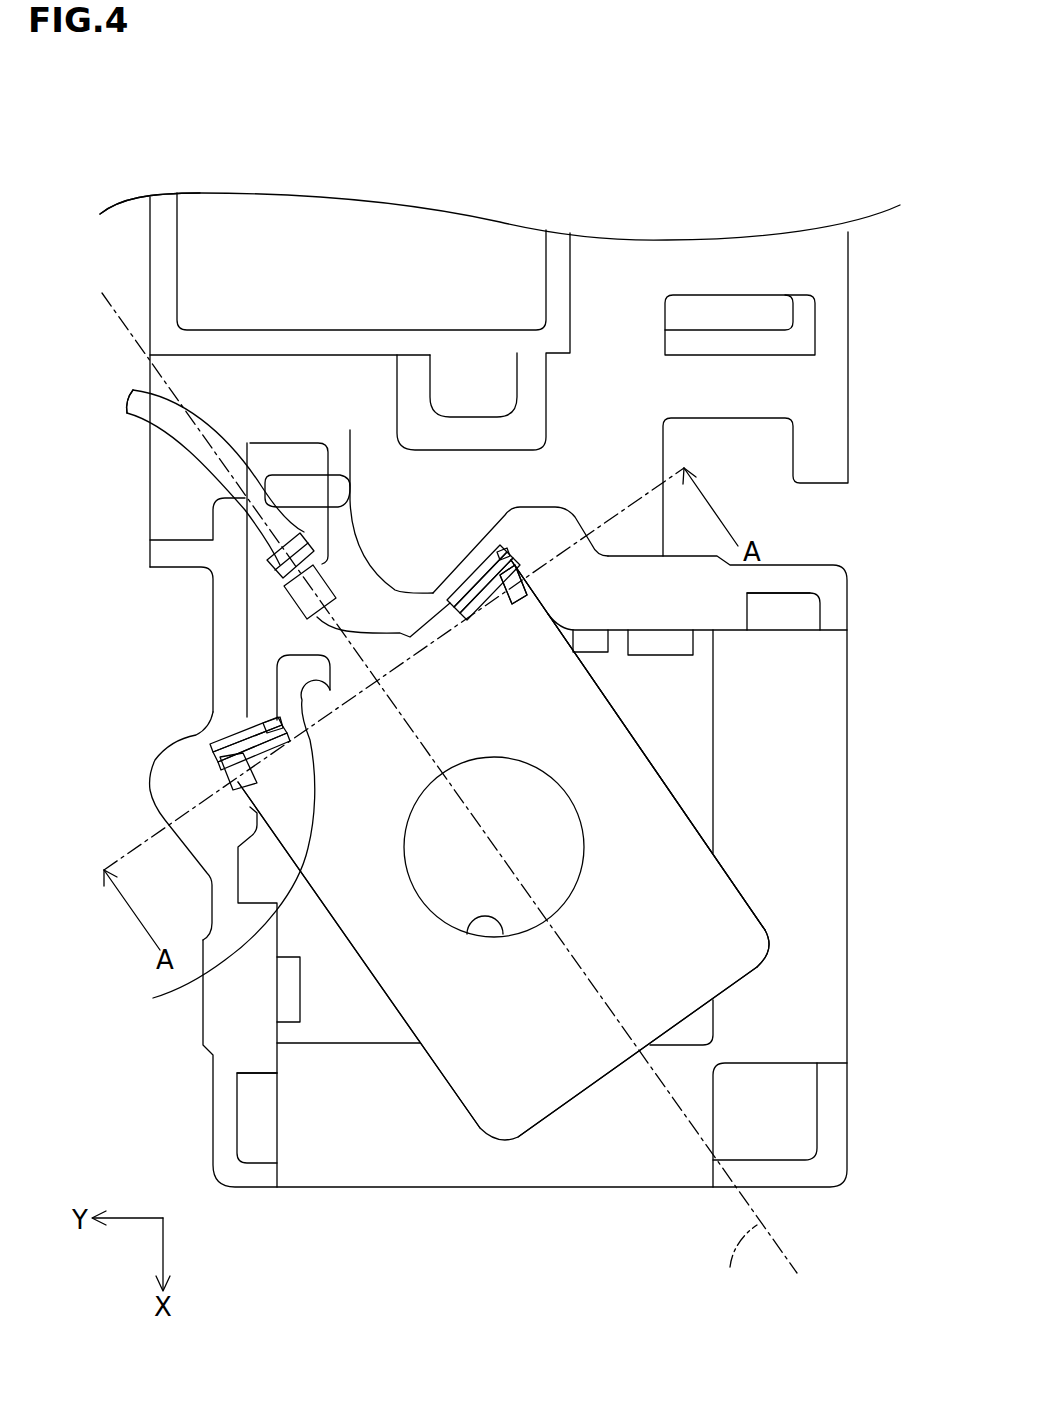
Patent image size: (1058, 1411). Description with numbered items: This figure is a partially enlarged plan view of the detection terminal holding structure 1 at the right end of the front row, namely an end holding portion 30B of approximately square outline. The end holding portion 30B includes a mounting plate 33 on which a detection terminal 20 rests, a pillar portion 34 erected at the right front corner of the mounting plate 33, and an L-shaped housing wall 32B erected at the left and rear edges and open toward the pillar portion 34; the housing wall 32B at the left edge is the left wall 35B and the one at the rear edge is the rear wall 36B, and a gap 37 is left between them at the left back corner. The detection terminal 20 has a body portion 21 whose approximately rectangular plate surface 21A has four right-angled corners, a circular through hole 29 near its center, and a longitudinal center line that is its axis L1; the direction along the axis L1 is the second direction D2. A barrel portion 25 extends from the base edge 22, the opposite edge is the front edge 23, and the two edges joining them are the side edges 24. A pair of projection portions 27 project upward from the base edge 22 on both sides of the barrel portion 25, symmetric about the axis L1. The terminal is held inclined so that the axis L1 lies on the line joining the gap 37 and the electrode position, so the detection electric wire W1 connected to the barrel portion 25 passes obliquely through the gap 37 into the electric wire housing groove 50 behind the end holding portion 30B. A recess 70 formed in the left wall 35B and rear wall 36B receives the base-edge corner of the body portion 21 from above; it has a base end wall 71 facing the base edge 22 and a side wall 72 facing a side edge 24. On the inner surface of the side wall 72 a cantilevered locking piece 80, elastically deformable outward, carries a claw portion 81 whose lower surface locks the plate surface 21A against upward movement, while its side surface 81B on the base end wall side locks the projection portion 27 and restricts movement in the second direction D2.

The electrical connection device 1 is at (186, 135).
The detection terminal 20 is at (700, 963).
The plate surface 21A is at (690, 907).
The body portion 21 is at (763, 948).
The base edge 22 is at (226, 846).
The front edge 23 is at (590, 1085).
The side edges 24 is at (643, 750).
The barrel portion 25 is at (300, 603).
The projection portions 27 is at (433, 557).
The through hole 29 is at (502, 930).
The end holding portion 30B is at (659, 672).
The housing wall 32B is at (523, 833).
The mounting plate 33 is at (802, 785).
The pillar portion 34 is at (783, 1115).
The left wall 35B is at (253, 1060).
The rear wall 36B is at (710, 617).
The gap 37 is at (250, 443).
The electric wire housing groove 50 is at (145, 377).
The recess 70 is at (478, 545).
The base end wall 71 is at (453, 557).
The side wall 72 is at (518, 537).
The locking piece 80 is at (513, 584).
The claw portion 81 is at (100, 915).
The side surface 81B is at (523, 577).
The detection electric wire W1 is at (177, 433).
The axis L1 is at (463, 795).
The second direction D2 is at (734, 1265).